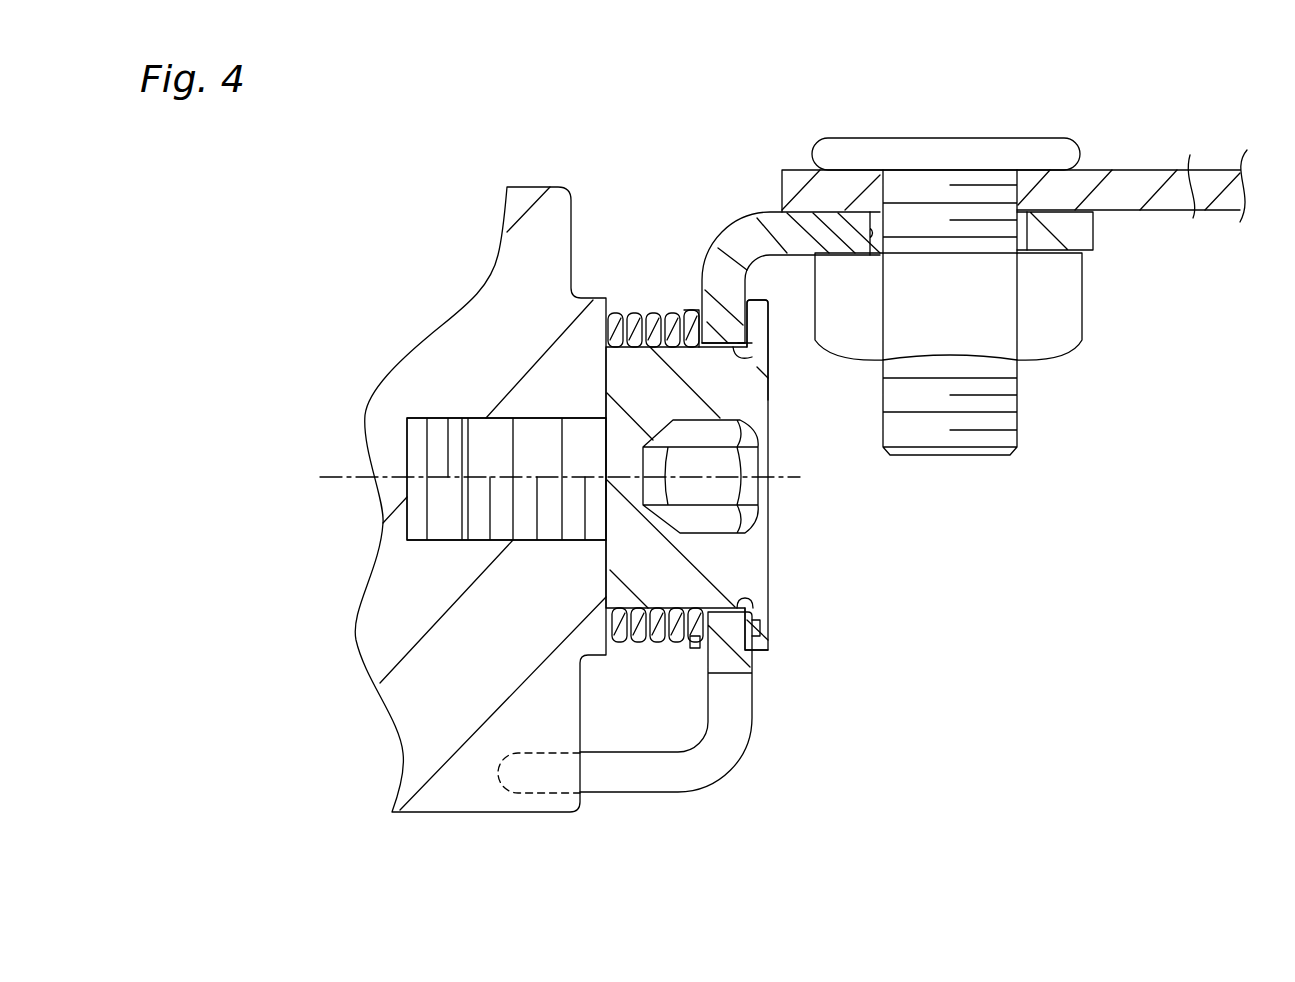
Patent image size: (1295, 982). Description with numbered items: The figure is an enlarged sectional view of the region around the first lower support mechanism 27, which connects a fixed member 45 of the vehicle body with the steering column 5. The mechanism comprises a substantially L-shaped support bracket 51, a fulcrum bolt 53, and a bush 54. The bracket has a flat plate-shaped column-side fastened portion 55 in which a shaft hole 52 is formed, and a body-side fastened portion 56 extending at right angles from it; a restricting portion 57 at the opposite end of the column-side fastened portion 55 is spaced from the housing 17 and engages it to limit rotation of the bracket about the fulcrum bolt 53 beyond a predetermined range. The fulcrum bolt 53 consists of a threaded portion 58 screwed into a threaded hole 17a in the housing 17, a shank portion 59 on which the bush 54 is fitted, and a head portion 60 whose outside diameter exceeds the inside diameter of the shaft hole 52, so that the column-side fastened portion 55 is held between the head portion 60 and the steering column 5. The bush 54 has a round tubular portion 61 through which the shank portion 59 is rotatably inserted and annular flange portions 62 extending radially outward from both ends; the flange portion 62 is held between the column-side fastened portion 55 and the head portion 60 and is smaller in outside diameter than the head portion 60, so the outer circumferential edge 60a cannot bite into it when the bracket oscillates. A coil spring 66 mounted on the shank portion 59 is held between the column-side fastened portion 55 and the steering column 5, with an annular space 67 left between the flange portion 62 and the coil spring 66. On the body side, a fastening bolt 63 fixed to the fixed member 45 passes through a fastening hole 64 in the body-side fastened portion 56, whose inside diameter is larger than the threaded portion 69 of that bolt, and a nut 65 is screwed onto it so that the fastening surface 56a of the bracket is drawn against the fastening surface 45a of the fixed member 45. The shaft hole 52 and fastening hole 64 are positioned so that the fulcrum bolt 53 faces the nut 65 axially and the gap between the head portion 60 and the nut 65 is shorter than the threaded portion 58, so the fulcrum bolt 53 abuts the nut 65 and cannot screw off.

The steering column 5 is at (480, 477).
The housing 17 is at (535, 187).
The threaded hole 17a is at (435, 425).
The first lower support mechanism 27 is at (937, 620).
The fixed member 45 is at (1103, 170).
The fastening surface 45a is at (1186, 175).
The support bracket 51 is at (742, 226).
The shaft hole 52 is at (750, 352).
The fulcrum bolt 53 is at (770, 385).
The bush 54 is at (700, 300).
The column-side fastened portion 55 is at (730, 670).
The body-side fastened portion 56 is at (1093, 238).
The fastening surface 56a is at (1057, 212).
The restricting portion 57 is at (518, 797).
The threaded portion 58 is at (527, 528).
The shank portion 59 is at (628, 642).
The head portion 60 is at (770, 560).
The outer circumferential edge 60a is at (755, 655).
The tubular portion 61 is at (745, 604).
The flange portion 62 is at (693, 642).
The fastening bolt 63 is at (945, 140).
The fastening hole 64 is at (866, 255).
The nut 65 is at (1082, 330).
The coil spring 66 is at (616, 313).
The annular space 67 is at (688, 312).
The threaded portion 69 is at (930, 447).